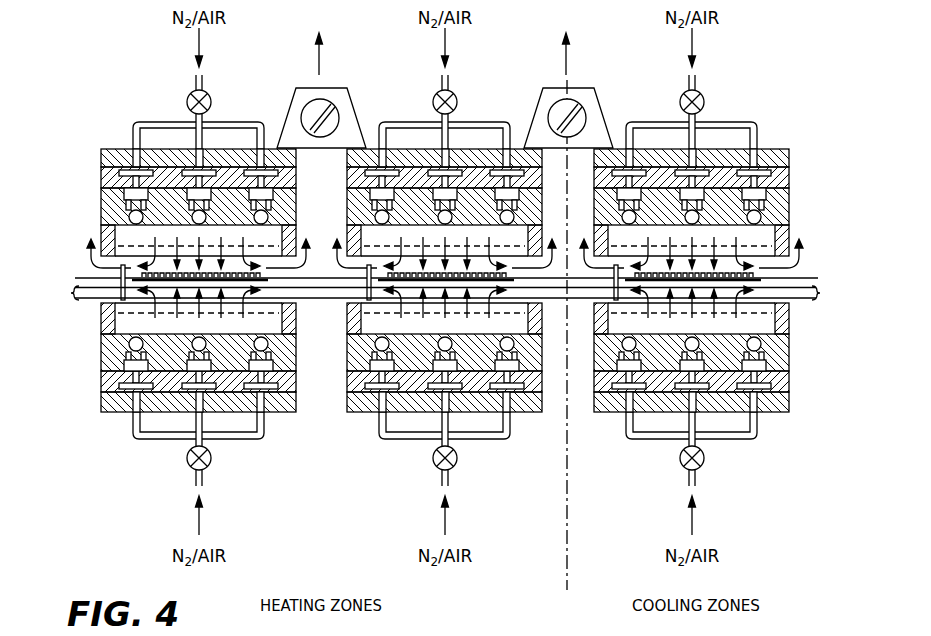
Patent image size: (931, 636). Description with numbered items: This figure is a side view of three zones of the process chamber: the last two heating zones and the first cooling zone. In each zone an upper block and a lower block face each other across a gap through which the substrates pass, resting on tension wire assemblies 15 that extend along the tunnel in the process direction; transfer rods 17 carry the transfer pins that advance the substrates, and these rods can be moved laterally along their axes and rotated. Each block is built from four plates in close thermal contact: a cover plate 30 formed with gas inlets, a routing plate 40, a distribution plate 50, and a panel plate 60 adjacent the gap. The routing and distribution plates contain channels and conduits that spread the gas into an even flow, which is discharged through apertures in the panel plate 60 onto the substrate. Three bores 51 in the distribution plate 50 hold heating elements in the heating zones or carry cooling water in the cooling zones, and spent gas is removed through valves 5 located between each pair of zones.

The valve 5 is at (581, 108).
The tension wire assembly 15 is at (804, 278).
The transfer rod 17 is at (806, 292).
The cover plate 30 is at (100, 160).
The routing plate 40 is at (100, 178).
The distribution plate 50 is at (100, 208).
The bore 51 is at (131, 346).
The panel plate 60 is at (100, 240).